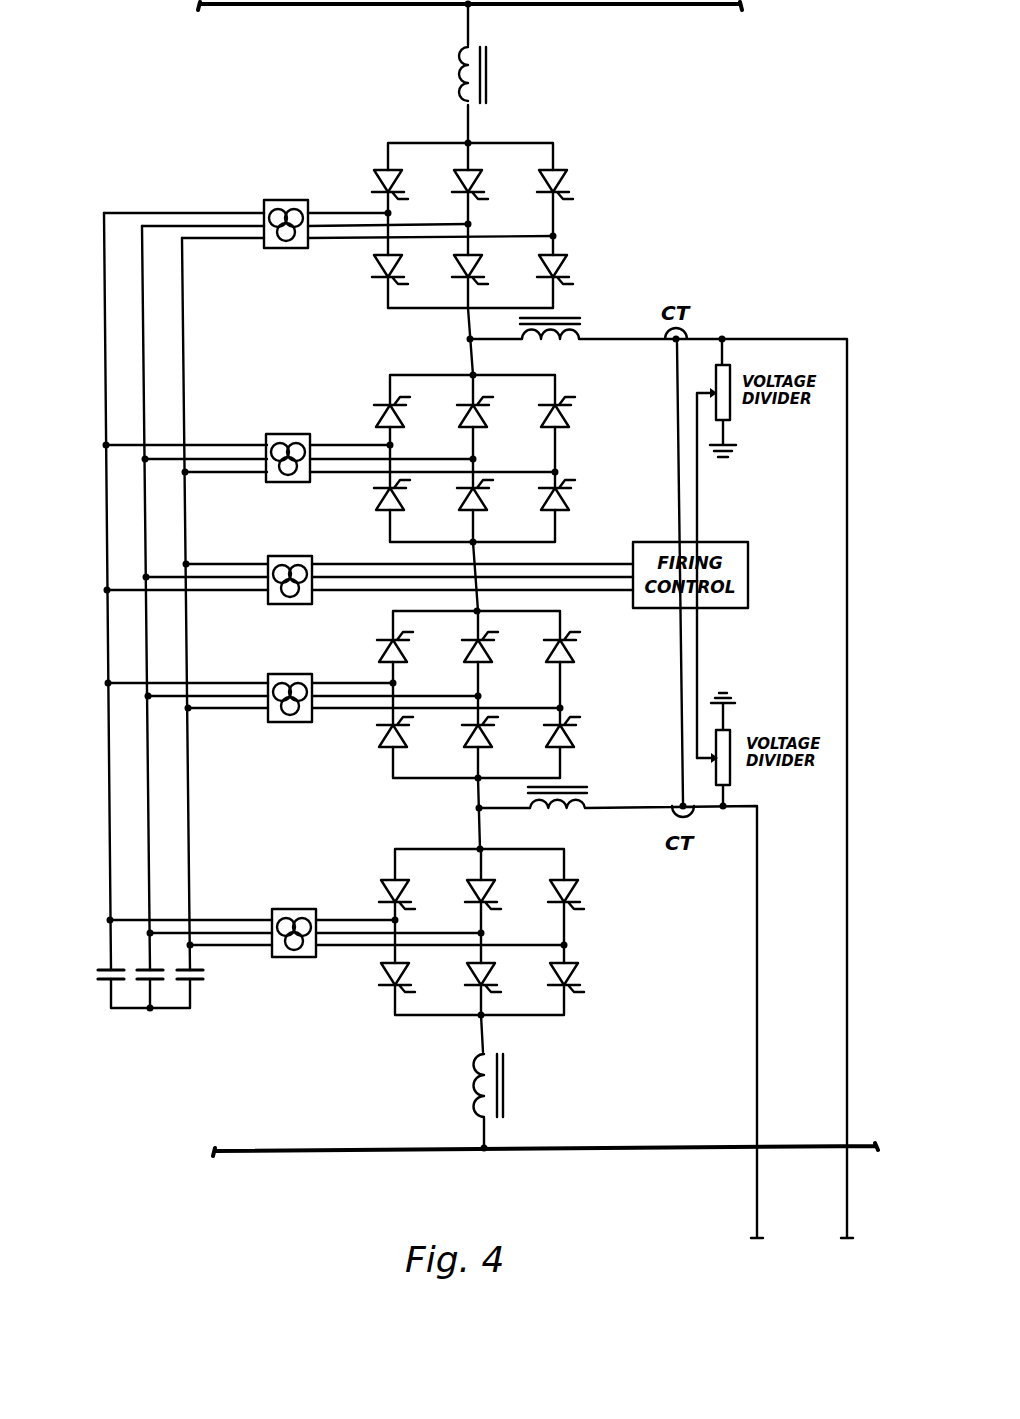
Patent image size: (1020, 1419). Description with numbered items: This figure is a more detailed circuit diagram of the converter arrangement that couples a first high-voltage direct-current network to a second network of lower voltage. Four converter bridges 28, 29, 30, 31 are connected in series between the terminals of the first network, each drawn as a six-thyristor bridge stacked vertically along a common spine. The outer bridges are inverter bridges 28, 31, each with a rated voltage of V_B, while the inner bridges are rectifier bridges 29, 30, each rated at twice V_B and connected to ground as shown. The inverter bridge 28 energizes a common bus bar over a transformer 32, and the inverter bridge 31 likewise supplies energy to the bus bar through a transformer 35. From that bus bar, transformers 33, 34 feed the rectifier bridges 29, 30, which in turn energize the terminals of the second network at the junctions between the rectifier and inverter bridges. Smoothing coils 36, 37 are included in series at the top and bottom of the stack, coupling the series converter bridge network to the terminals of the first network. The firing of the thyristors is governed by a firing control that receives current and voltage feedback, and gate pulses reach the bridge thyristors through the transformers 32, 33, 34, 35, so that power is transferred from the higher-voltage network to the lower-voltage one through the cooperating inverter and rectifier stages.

The inverter bridge 28 is at (523, 190).
The rectifier bridge 29 is at (530, 422).
The rectifier bridge 30 is at (533, 672).
The inverter bridge 31 is at (533, 900).
The transformer 32 is at (303, 190).
The transformer 33 is at (302, 421).
The transformer 34 is at (311, 667).
The transformer 35 is at (297, 958).
The smoothing coil 36 is at (478, 1088).
The smoothing coil 37 is at (463, 72).